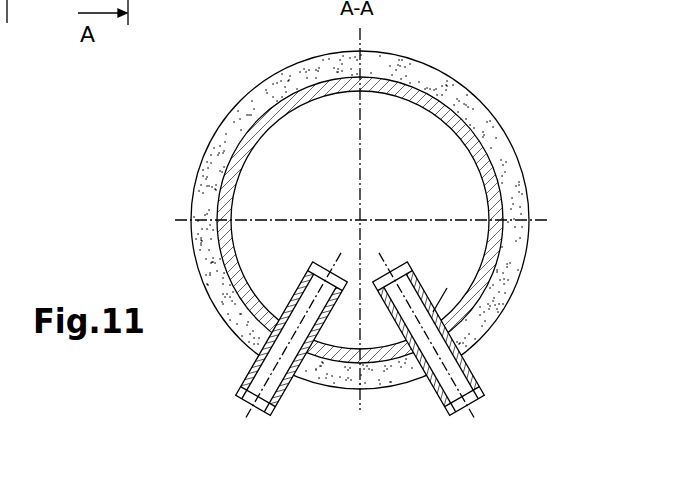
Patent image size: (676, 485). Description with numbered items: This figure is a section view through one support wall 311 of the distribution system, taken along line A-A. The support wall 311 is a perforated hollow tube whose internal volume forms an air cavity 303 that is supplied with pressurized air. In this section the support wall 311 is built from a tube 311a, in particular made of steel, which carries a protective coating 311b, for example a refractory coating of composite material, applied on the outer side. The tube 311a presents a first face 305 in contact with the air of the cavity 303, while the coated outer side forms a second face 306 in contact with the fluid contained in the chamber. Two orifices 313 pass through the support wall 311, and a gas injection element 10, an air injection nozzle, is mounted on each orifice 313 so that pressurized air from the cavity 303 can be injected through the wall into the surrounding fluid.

The gas injection element 10 is at (236, 407).
The air cavity 303 is at (428, 143).
The first face 305 is at (488, 202).
The second face 306 is at (526, 174).
The support wall 311 is at (85, 235).
The tube 311a is at (221, 200).
The protective coating 311b is at (219, 150).
The orifice 313 is at (440, 307).